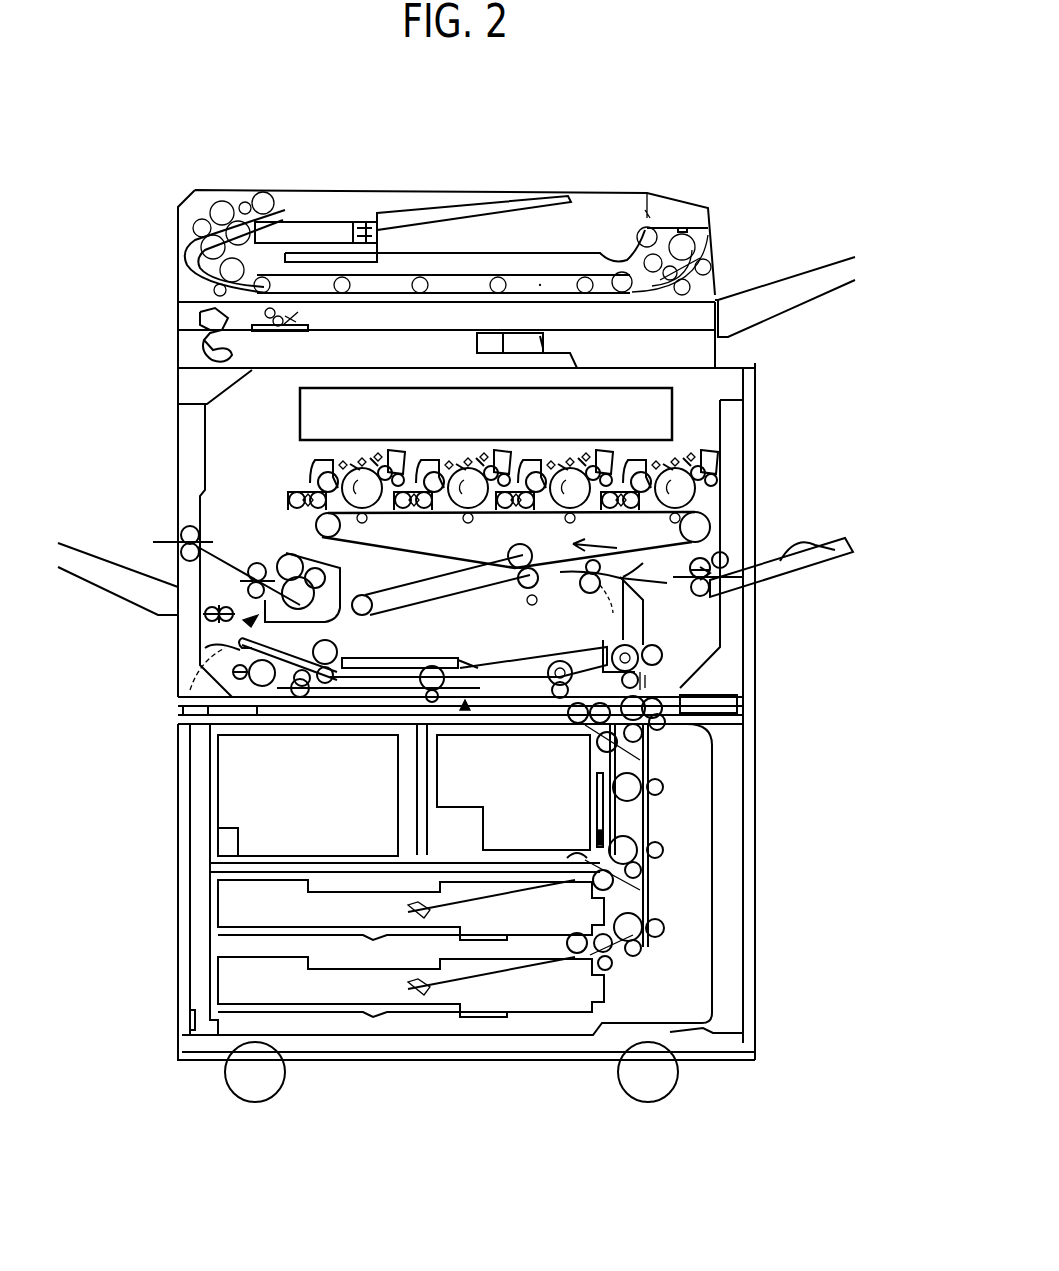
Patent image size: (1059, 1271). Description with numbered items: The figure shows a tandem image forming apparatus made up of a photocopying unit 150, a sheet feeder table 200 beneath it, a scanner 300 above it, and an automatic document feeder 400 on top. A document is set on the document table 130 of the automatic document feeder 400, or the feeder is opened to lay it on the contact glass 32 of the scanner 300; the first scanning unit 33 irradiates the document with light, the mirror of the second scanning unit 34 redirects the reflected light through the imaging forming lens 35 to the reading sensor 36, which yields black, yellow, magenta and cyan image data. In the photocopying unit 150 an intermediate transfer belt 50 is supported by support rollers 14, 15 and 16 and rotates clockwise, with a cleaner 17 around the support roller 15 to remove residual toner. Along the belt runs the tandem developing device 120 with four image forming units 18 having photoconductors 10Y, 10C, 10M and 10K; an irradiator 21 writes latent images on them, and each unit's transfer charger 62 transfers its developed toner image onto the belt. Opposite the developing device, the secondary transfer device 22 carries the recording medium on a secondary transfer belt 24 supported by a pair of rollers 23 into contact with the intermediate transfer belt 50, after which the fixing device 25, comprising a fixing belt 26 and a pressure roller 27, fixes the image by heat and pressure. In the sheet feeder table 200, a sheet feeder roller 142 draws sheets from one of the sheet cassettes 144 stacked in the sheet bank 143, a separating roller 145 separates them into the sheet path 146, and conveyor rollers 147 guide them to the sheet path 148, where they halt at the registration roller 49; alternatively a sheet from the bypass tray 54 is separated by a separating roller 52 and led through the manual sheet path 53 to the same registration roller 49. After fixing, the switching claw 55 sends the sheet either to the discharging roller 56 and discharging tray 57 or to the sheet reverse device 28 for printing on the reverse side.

The automatic document feeder 400 is at (172, 220).
The document table 130 is at (430, 212).
The contact glass 32 is at (542, 283).
The scanner 300 is at (172, 327).
The second scanning unit 34 is at (200, 345).
The first scanning unit 33 is at (275, 333).
The imaging forming lens 35 is at (478, 345).
The reading sensor 36 is at (548, 346).
The photocopying unit 150 is at (172, 447).
The irradiator 21 is at (674, 398).
The tandem developing device 120 is at (511, 461).
The photoconductor for yellow 10Y is at (345, 466).
The photoconductor for cyan 10C is at (450, 466).
The photoconductor for magenta 10M is at (552, 466).
The photoconductor for black 10K is at (658, 466).
The image forming unit 18 is at (372, 455).
The transfer charger 62 is at (368, 522).
The cleaner 17 is at (511, 548).
The support roller 15 is at (340, 535).
The support roller 14 is at (712, 525).
The support roller 16 is at (518, 570).
The intermediate transfer belt 50 is at (462, 556).
The secondary transfer device 22 is at (548, 588).
The secondary transfer belt 24 is at (450, 590).
The roller 23 is at (375, 612).
The fixing belt 26 is at (290, 556).
The pressure roller 27 is at (320, 585).
The fixing device 25 is at (245, 610).
The discharging roller 56 is at (185, 530).
The discharging tray 57 is at (115, 583).
The switching claw 55 is at (205, 616).
The registration roller 49 is at (622, 608).
The sheet path 148 is at (664, 648).
The sheet reverse device 28 is at (470, 714).
The manual sheet path 53 is at (650, 583).
The separating roller 52 is at (705, 600).
The bypass tray 54 is at (790, 570).
The sheet feeder table 200 is at (172, 808).
The sheet bank 143 is at (210, 932).
The sheet cassette 144 is at (280, 862).
The sheet feeder roller 142 is at (578, 725).
The separating roller 145 is at (580, 780).
The sheet path 146 is at (650, 822).
The conveyor roller 147 is at (658, 722).